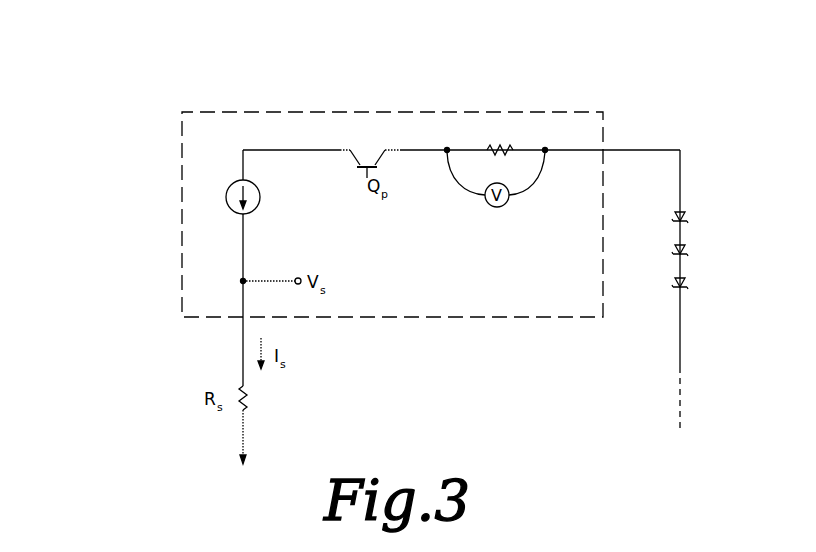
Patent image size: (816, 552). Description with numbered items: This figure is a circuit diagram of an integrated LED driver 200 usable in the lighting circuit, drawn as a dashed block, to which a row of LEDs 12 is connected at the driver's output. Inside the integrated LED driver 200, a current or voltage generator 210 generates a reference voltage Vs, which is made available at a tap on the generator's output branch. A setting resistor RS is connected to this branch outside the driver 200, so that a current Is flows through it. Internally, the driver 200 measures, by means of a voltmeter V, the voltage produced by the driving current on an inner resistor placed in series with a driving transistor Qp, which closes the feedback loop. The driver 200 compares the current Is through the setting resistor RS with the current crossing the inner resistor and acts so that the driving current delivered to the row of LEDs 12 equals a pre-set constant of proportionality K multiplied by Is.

The integrated LED driver 200 is at (170, 270).
The current or voltage generator 210 is at (226, 196).
The row of LEDs 12 is at (652, 285).